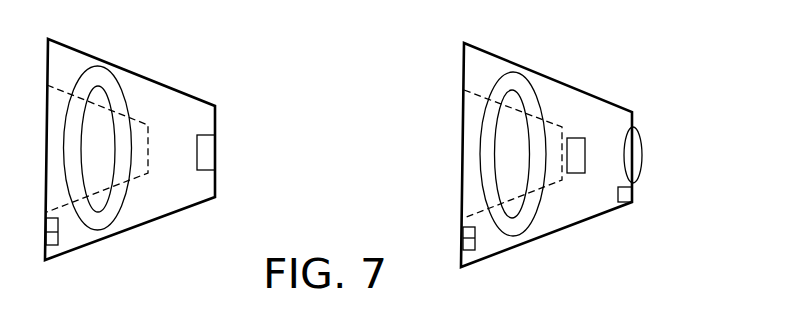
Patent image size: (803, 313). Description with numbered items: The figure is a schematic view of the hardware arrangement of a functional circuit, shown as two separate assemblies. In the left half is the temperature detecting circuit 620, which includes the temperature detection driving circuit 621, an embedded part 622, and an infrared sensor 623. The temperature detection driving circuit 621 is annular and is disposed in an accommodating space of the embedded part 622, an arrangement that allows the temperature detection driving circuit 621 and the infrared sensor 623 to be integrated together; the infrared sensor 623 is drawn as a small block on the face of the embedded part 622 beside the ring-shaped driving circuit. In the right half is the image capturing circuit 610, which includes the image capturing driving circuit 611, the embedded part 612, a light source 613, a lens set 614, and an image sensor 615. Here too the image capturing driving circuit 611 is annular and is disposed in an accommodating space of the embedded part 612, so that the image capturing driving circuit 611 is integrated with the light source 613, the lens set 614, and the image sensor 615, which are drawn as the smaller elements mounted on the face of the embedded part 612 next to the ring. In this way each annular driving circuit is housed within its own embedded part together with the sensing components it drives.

The image capturing circuit 610 is at (585, 143).
The image capturing driving circuit 611 is at (518, 82).
The embedded part 612 is at (587, 113).
The light source 613 is at (632, 197).
The lens set 614 is at (633, 152).
The image sensor 615 is at (572, 167).
The temperature detecting circuit 620 is at (165, 134).
The temperature detection driving circuit 621 is at (102, 80).
The embedded part 622 is at (195, 113).
The infrared sensor 623 is at (210, 152).